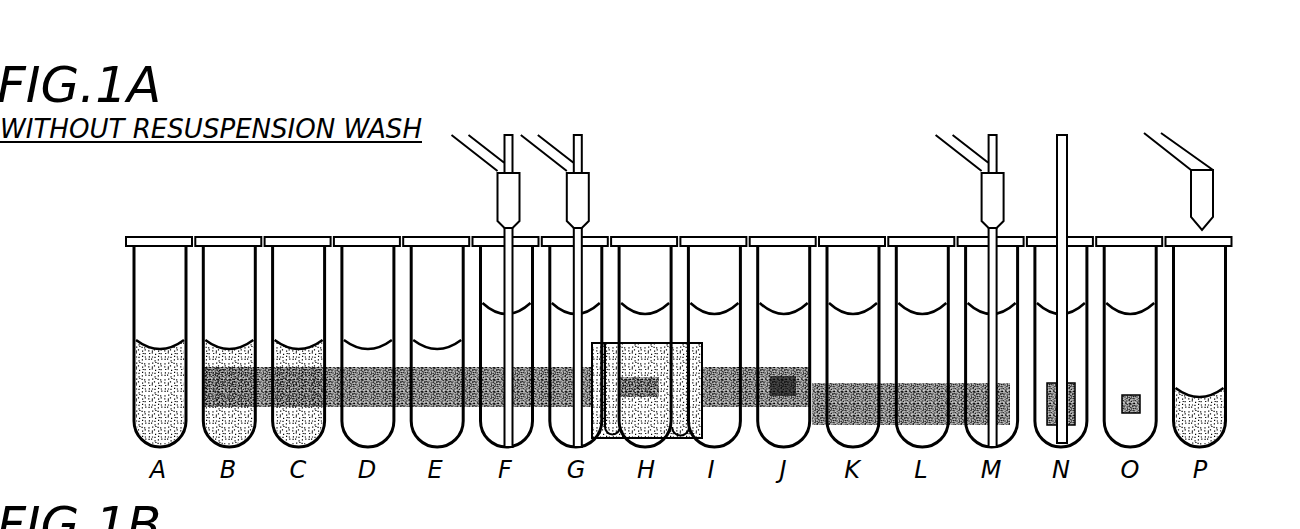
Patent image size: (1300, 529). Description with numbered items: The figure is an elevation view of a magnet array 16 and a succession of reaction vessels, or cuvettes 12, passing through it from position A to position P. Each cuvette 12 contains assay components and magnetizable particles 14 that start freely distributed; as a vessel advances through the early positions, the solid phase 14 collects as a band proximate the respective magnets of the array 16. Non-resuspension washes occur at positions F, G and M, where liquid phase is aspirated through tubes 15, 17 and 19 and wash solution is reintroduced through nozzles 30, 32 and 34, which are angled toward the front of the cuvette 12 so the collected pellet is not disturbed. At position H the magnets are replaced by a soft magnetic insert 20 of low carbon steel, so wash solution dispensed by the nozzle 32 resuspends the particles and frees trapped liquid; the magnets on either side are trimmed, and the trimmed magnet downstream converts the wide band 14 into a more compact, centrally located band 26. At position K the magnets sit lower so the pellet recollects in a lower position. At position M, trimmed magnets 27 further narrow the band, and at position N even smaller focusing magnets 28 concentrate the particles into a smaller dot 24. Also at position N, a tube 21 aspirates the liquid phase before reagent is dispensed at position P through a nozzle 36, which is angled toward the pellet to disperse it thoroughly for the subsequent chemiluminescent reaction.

The cuvette 12 is at (133, 295).
The magnetizable particles 14 is at (136, 380).
The tube 15 is at (500, 278).
The magnet array 16 is at (238, 352).
The tube 17 is at (583, 272).
The tube 19 is at (986, 287).
The soft magnetic insert 20 is at (656, 348).
The tube 21 is at (1057, 268).
The dot 24 is at (1130, 394).
The centrally located band 26 is at (777, 367).
The trimmed magnets 27 is at (980, 383).
The focusing magnets 28 is at (1049, 417).
The nozzle 30 is at (496, 202).
The nozzle 32 is at (591, 197).
The nozzle 34 is at (981, 197).
The nozzle 36 is at (1214, 192).